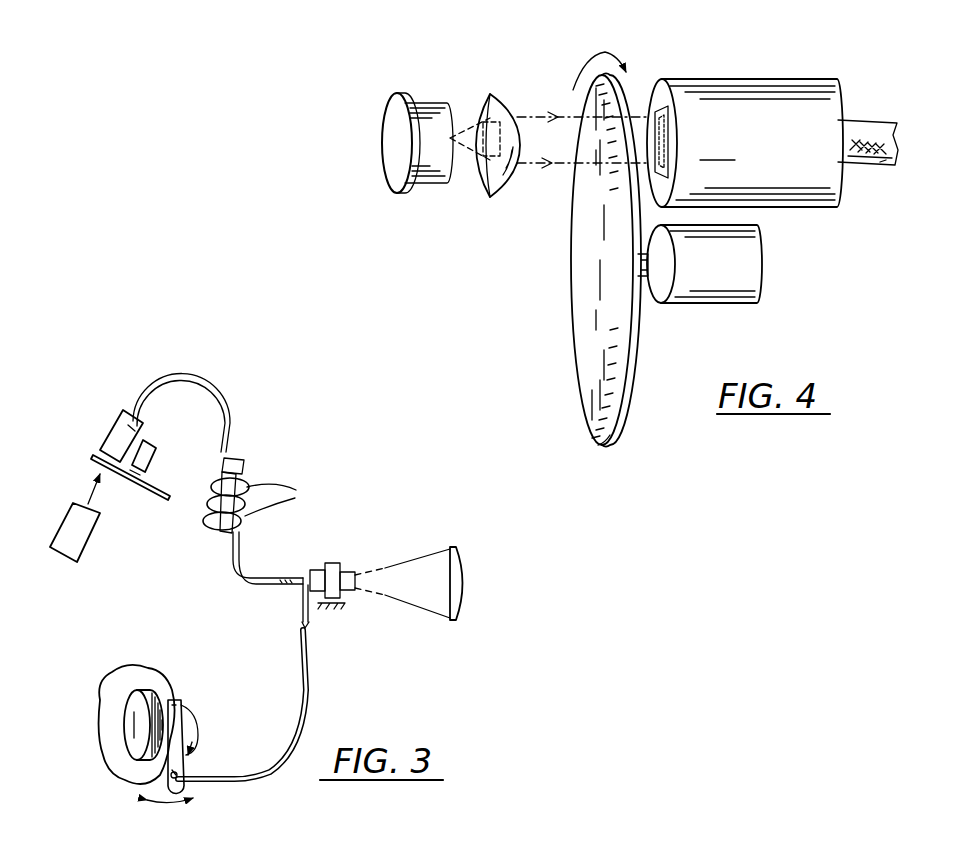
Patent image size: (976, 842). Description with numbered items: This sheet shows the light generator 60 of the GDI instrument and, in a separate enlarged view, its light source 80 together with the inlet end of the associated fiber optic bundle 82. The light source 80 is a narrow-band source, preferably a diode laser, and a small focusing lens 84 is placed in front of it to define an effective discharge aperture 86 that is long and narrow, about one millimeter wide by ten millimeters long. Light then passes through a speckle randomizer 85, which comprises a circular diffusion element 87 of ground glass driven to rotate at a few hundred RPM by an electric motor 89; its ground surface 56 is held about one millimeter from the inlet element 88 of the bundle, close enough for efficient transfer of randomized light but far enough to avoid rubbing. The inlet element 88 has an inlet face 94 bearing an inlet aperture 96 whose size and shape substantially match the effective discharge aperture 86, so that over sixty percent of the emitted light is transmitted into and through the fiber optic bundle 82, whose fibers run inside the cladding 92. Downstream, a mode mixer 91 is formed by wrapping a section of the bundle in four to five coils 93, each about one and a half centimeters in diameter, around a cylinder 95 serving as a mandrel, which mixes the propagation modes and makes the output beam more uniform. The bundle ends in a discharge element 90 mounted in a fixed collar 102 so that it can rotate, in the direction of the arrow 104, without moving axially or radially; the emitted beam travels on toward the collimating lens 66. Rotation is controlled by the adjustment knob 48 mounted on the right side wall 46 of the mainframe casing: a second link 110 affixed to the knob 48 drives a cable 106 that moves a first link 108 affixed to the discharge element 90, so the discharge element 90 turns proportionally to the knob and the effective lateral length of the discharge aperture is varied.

In FIG. 3, the right side wall 46 is at (131, 677).
In FIG. 3, the adjustment knob 48 is at (131, 727).
In FIG. 4, the ground surface 56 is at (628, 420).
In FIG. 3, the ground surface 56 is at (155, 484).
In FIG. 3, the light generator 60 is at (305, 447).
In FIG. 3, the collimating lens 66 is at (465, 556).
In FIG. 4, the light source 80 is at (425, 118).
In FIG. 3, the light source 80 is at (62, 518).
In FIG. 4, the fiber optic bundle 82 is at (864, 112).
In FIG. 3, the fiber optic bundle 82 is at (234, 390).
In FIG. 4, the focusing lens 84 is at (488, 100).
In FIG. 4, the speckle randomizer 85 is at (668, 311).
In FIG. 3, the speckle randomizer 85 is at (139, 491).
In FIG. 4, the effective discharge aperture 86 is at (484, 158).
In FIG. 4, the diffusion element 87 is at (580, 302).
In FIG. 3, the diffusion element 87 is at (95, 458).
In FIG. 4, the inlet element 88 is at (775, 90).
In FIG. 3, the inlet element 88 is at (121, 425).
In FIG. 4, the electric motor 89 is at (752, 258).
In FIG. 3, the electric motor 89 is at (152, 447).
In FIG. 3, the discharge element 90 is at (347, 565).
In FIG. 3, the mode mixer 91 is at (256, 473).
In FIG. 4, the cladding 92 is at (882, 165).
In FIG. 3, the cladding 92 is at (240, 577).
In FIG. 3, the coils 93 is at (283, 498).
In FIG. 4, the inlet face 94 is at (661, 92).
In FIG. 3, the cylinder 95 is at (213, 538).
In FIG. 4, the inlet aperture 96 is at (648, 103).
In FIG. 3, the collar 102 is at (329, 563).
In FIG. 3, the arrow 104 is at (193, 702).
In FIG. 3, the cable 106 is at (310, 675).
In FIG. 3, the first link 108 is at (302, 608).
In FIG. 3, the second link 110 is at (167, 775).